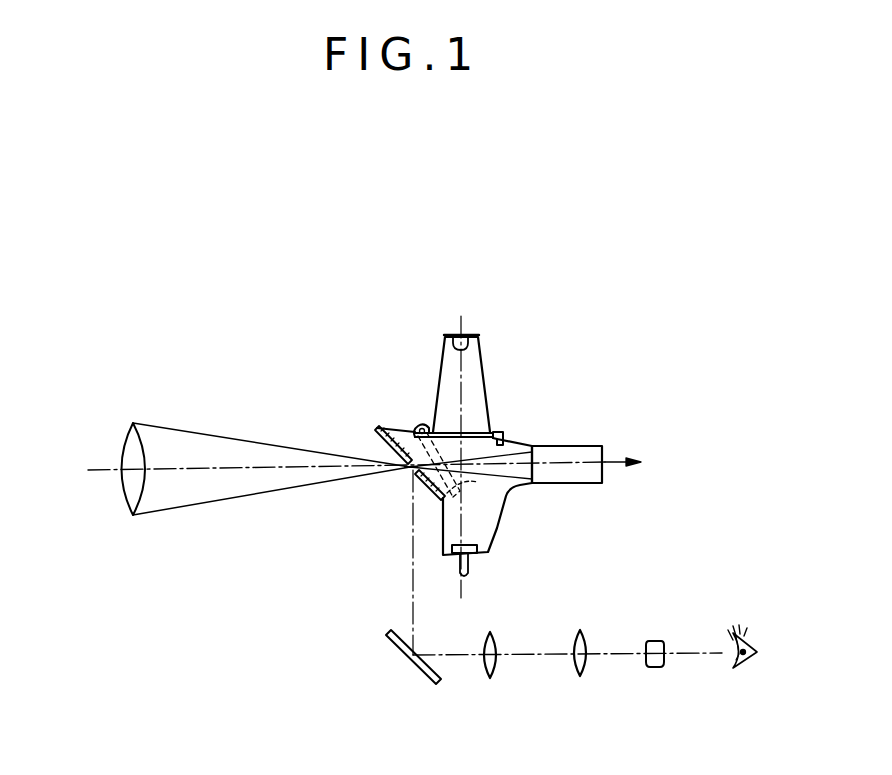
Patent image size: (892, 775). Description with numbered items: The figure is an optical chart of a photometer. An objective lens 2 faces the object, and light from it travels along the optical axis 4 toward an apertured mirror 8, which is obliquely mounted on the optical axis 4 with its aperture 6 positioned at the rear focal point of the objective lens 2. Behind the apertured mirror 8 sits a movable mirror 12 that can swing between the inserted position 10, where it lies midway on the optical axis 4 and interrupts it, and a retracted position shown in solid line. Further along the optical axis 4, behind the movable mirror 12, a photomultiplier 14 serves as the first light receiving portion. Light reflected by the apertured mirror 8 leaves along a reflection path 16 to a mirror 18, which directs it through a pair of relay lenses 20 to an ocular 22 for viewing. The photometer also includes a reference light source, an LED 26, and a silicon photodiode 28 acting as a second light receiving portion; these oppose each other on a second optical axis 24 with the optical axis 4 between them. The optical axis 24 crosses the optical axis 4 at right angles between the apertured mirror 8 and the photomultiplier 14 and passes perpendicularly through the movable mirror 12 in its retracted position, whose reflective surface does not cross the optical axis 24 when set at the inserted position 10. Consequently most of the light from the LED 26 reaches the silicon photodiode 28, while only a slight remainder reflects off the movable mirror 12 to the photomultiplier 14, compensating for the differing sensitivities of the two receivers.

The objective lens 2 is at (134, 427).
The optical axis 4 is at (244, 468).
The aperture 6 is at (409, 470).
The apertured mirror 8 is at (377, 429).
The inserted position 10 is at (455, 472).
The movable mirror 12 is at (500, 443).
The photomultiplier 14 is at (598, 446).
The observation beam path 16 is at (410, 580).
The mirror 18 is at (430, 675).
The relay lenses 20 is at (582, 676).
The ocular 22 is at (654, 668).
The optical axis 24 is at (462, 390).
The LED 26 is at (463, 336).
The silicon photodiode 28 is at (477, 555).